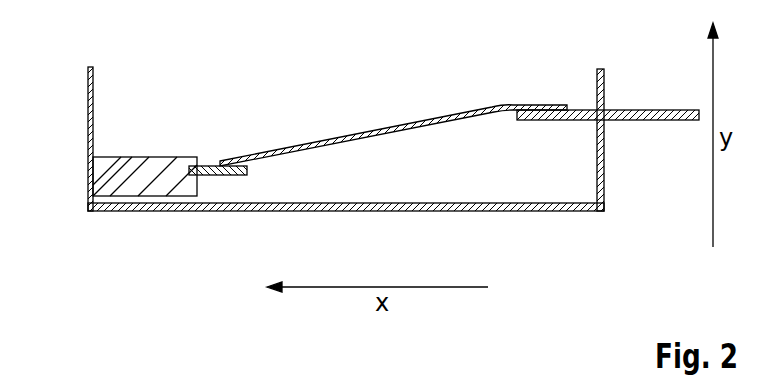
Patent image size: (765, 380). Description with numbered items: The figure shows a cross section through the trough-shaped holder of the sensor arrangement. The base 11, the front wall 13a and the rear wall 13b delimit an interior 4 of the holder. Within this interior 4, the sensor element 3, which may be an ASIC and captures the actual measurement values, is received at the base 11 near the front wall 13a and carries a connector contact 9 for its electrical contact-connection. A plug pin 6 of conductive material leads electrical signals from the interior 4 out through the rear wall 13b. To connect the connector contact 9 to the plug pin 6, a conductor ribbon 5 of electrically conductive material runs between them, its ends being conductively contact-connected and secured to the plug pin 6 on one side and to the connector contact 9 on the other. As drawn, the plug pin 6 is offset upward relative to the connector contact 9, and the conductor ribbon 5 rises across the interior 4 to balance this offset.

The sensor element 3 is at (144, 157).
The interior 4 is at (440, 181).
The conductor ribbon 5 is at (370, 133).
The plug pin 6 is at (660, 110).
The connector contact 9 is at (212, 166).
The base 11 is at (348, 211).
The front wall 13a is at (88, 105).
The rear wall 13b is at (604, 160).